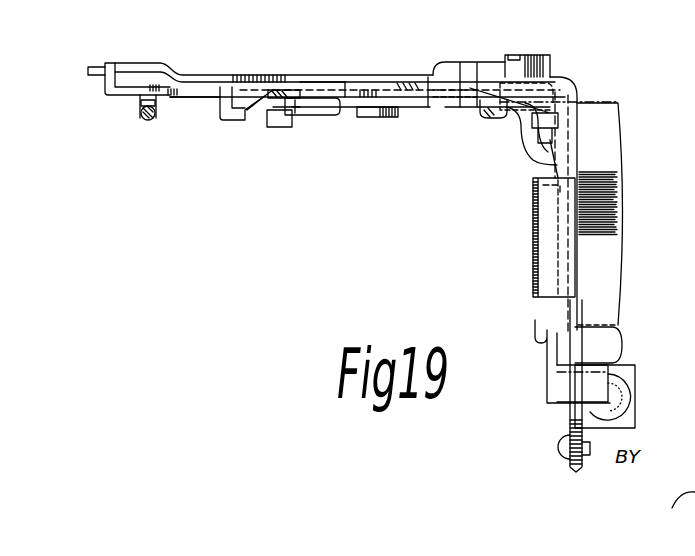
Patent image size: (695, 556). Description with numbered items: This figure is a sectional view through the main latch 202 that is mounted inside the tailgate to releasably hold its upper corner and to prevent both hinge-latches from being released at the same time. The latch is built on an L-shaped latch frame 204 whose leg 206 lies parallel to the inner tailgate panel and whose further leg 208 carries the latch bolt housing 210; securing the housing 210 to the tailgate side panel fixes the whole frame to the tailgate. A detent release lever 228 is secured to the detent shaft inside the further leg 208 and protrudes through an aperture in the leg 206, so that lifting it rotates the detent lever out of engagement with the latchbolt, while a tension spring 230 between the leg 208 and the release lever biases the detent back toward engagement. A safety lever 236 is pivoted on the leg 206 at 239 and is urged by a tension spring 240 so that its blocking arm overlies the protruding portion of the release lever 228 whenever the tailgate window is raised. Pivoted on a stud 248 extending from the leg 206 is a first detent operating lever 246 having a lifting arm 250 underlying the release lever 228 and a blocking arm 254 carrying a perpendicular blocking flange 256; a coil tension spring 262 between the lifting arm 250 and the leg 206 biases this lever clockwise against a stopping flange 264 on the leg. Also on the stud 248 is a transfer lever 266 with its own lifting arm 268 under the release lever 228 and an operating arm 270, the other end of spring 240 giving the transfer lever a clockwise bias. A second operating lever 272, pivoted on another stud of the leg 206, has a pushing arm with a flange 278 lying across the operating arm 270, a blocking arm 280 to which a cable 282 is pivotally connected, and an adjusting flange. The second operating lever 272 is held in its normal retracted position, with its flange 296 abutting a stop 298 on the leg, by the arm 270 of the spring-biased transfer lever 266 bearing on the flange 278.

The main latch 202 is at (267, 160).
The latch frame 204 is at (576, 474).
The leg 206 is at (377, 77).
The further leg 208 is at (587, 352).
The latch bolt housing 210 is at (612, 252).
The detent release lever 228 is at (548, 378).
The tension spring 230 is at (532, 252).
The safety lever 236 is at (480, 68).
The pivot 239 is at (523, 58).
The tension spring 240 is at (497, 118).
The first detent operating lever 246 is at (323, 93).
The stud 248 is at (373, 117).
The lifting arm 250 is at (560, 92).
The blocking arm 254 is at (288, 90).
The blocking flange 256 is at (227, 88).
The coil tension spring 262 is at (567, 137).
The stopping flange 264 is at (440, 87).
The transfer lever 266 is at (420, 110).
The lifting arm 268 is at (600, 99).
The operating arm 270 is at (315, 110).
The second operating lever 272 is at (208, 102).
The flange 278 is at (280, 120).
The blocking arm 280 is at (177, 92).
The cable 282 is at (148, 120).
The flange 296 is at (113, 63).
The stop 298 is at (103, 45).